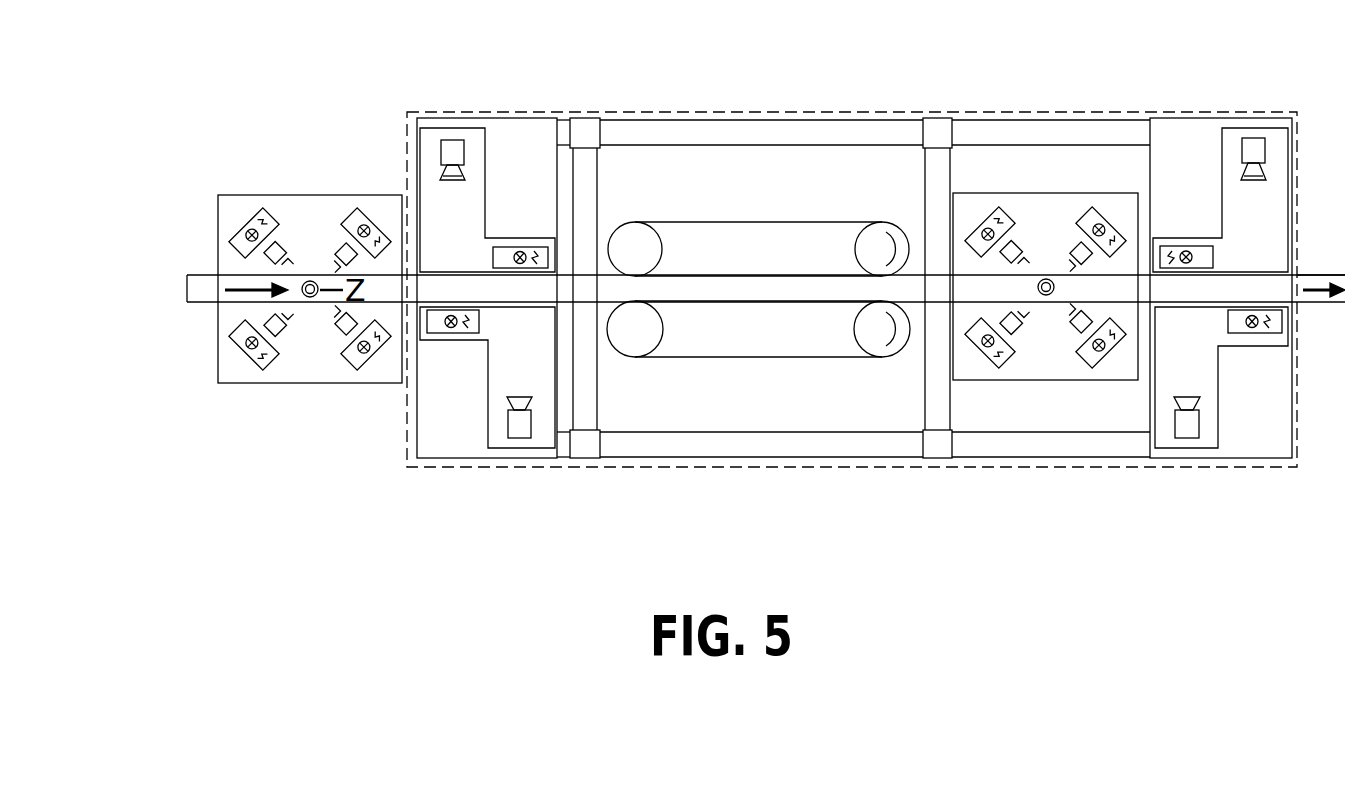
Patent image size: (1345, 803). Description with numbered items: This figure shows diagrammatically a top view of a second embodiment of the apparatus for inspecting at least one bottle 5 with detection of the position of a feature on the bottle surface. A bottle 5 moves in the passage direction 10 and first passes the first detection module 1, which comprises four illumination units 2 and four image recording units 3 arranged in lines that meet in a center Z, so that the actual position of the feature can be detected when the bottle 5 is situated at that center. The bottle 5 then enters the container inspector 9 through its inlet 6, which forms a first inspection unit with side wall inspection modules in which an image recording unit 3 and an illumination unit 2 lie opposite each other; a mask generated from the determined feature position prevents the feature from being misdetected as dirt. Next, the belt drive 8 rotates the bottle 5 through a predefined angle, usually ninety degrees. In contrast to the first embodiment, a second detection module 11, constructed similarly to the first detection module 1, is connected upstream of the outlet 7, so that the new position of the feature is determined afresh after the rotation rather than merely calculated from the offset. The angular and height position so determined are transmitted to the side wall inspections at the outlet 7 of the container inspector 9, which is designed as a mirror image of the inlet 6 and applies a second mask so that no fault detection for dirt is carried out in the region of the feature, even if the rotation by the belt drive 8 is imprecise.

The first detection module 1 is at (218, 195).
The illumination unit 2 is at (263, 212).
The image recording unit 3 is at (283, 243).
The bottle 5 is at (311, 281).
The inlet 6 is at (498, 118).
The outlet 7 is at (1240, 118).
The belt drive 8 is at (670, 222).
The container inspector 9 is at (812, 112).
The passage direction 10 is at (1320, 283).
The second detection module 11 is at (958, 193).